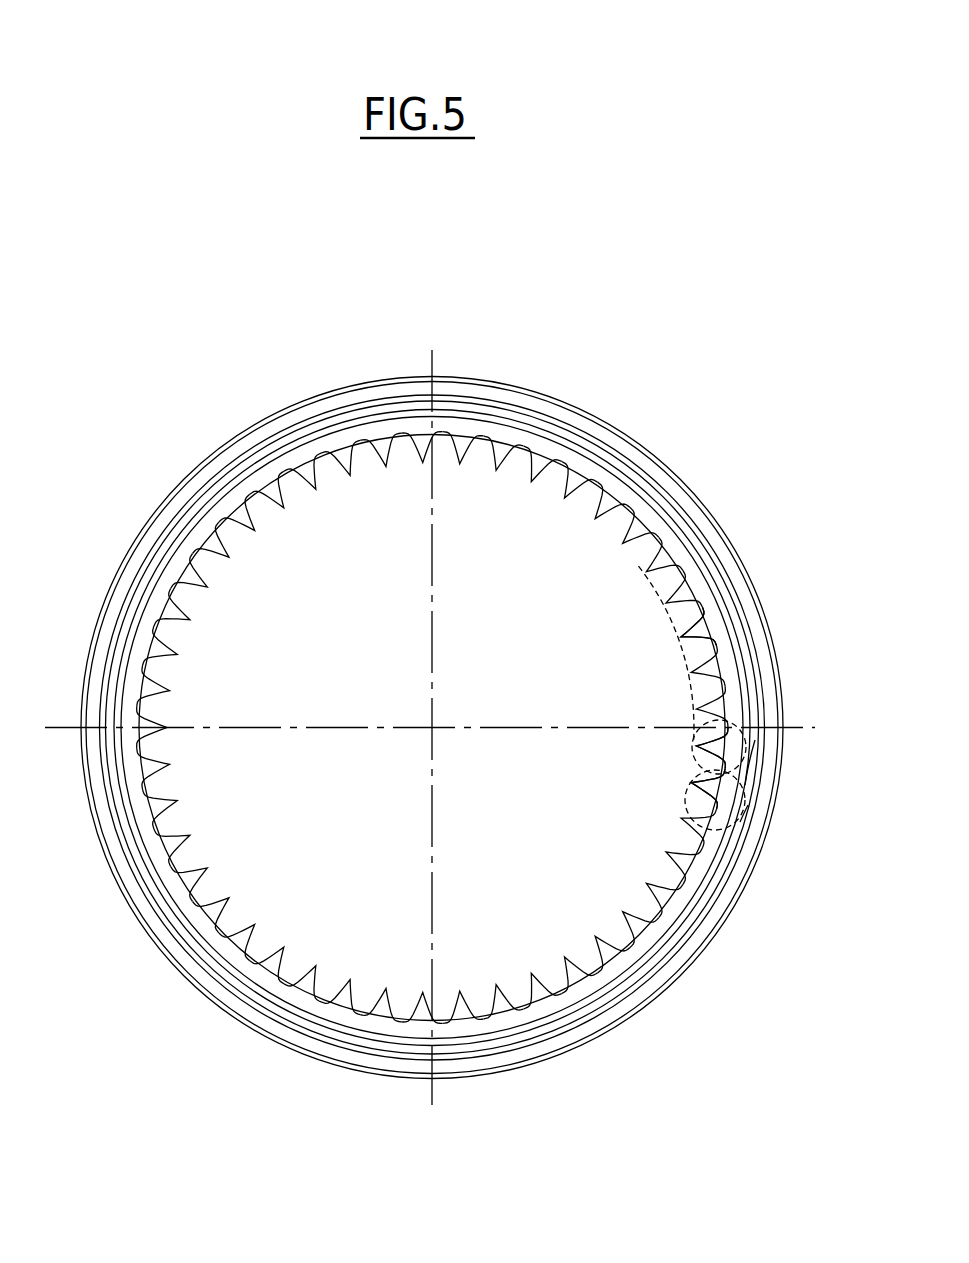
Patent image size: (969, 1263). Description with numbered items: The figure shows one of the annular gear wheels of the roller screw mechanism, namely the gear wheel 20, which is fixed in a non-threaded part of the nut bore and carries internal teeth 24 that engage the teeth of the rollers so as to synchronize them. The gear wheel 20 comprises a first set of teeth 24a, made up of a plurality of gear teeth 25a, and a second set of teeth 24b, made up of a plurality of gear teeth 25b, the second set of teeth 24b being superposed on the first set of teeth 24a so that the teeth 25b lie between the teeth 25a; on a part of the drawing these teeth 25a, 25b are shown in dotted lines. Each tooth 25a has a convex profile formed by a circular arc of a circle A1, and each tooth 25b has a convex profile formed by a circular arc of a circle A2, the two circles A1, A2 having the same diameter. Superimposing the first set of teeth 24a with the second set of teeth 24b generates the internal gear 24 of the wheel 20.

The gear wheel 20 is at (219, 366).
The internal teeth 24 is at (187, 578).
The first set of teeth 24a is at (723, 711).
The second set of teeth 24b is at (748, 793).
The gear teeth 25a is at (682, 654).
The gear teeth 25b is at (688, 692).
The circle A1 is at (745, 785).
The circle A2 is at (740, 822).